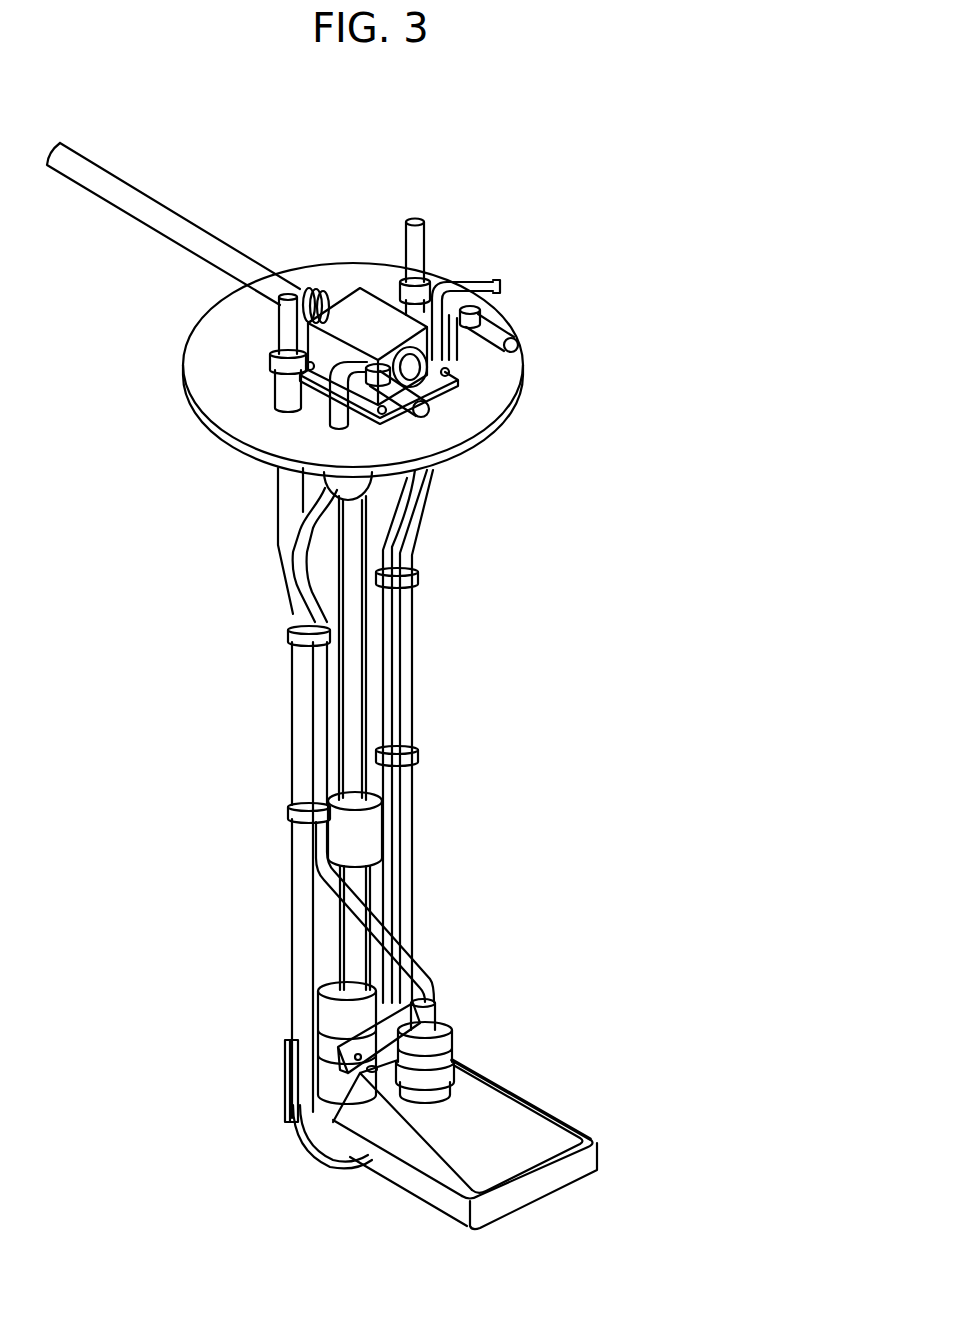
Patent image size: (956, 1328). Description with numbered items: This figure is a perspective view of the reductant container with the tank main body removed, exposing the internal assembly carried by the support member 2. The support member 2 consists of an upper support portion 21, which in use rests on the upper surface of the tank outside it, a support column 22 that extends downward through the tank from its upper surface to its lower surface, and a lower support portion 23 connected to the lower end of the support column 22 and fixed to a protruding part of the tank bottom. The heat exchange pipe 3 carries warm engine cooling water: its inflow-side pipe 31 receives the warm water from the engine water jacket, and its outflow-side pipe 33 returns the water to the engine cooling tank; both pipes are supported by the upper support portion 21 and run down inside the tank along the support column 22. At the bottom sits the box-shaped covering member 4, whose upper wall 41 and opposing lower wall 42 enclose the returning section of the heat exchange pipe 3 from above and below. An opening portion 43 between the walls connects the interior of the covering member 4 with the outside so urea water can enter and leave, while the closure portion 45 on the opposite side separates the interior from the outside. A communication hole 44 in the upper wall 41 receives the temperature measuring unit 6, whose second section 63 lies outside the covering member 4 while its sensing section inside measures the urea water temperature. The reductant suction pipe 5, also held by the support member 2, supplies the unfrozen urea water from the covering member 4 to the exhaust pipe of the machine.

The support member 2 is at (538, 365).
The upper support portion 21 is at (483, 414).
The support column 22 is at (358, 643).
The lower support portion 23 is at (303, 1148).
The heat exchange pipe 3 is at (434, 853).
The inflow-side pipe 31 is at (415, 604).
The outflow-side pipe 33 is at (300, 630).
The reductant suction pipe 5 is at (388, 707).
The temperature measuring unit 6 is at (433, 1055).
The second section 63 is at (423, 1052).
The covering member 4 is at (617, 1155).
The upper wall 41 is at (510, 1120).
The lower wall 42 is at (420, 1205).
The opening portion 43 is at (300, 1093).
The communication hole 44 is at (477, 1068).
The closure portion 45 is at (535, 1193).